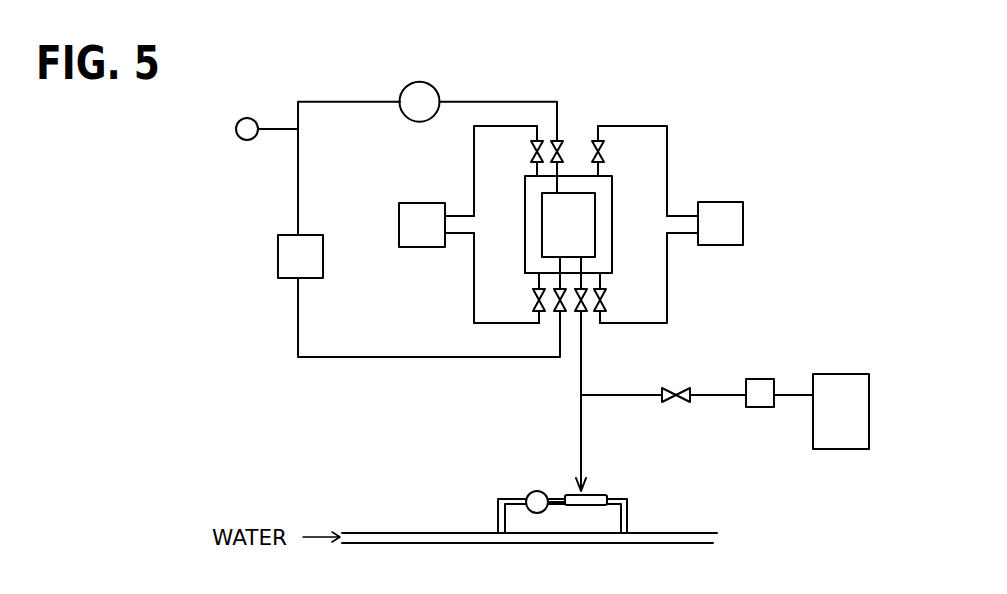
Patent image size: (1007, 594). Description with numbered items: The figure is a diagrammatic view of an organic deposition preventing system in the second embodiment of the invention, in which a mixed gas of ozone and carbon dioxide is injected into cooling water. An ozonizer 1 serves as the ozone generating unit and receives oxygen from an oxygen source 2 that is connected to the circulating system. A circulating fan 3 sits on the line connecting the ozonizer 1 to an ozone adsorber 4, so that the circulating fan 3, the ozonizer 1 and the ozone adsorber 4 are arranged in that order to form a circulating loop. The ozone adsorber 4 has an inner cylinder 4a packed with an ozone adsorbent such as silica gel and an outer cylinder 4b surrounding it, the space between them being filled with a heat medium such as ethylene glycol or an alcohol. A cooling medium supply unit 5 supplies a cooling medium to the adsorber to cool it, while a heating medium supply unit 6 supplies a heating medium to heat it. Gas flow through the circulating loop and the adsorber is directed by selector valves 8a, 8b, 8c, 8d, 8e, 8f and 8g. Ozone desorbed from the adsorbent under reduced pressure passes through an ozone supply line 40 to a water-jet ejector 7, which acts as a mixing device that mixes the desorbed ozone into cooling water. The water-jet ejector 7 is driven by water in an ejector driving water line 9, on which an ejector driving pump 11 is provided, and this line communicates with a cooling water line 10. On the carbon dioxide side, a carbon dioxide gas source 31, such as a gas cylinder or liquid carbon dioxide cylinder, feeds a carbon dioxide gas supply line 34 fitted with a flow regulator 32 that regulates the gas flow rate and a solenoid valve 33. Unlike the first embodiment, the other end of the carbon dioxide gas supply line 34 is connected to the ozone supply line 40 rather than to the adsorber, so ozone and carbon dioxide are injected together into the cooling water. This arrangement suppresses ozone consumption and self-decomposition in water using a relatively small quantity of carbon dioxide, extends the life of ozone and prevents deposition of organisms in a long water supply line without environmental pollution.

The ozonizer 1 is at (280, 235).
The oxygen source 2 is at (247, 118).
The circulating fan 3 is at (428, 84).
The ozone adsorber 4 is at (612, 212).
The inner cylinder 4a is at (542, 237).
The outer cylinder 4b is at (525, 268).
The cooling medium supply unit 5 is at (399, 215).
The heating medium supply unit 6 is at (743, 214).
The water-jet ejector 7 is at (600, 495).
The selector valve 8a is at (531, 152).
The selector valve 8b is at (537, 312).
The selector valve 8c is at (558, 140).
The selector valve 8d is at (558, 312).
The selector valve 8e is at (605, 158).
The selector valve 8f is at (603, 290).
The selector valve 8g is at (584, 312).
The ejector driving water line 9 is at (498, 520).
The cooling water line 10 is at (710, 533).
The ejector driving pump 11 is at (528, 494).
The carbon dioxide gas source 31 is at (855, 374).
The flow regulator 32 is at (762, 379).
The solenoid valve 33 is at (682, 388).
The carbon dioxide gas supply line 34 is at (630, 396).
The ozone supply line 40 is at (580, 440).